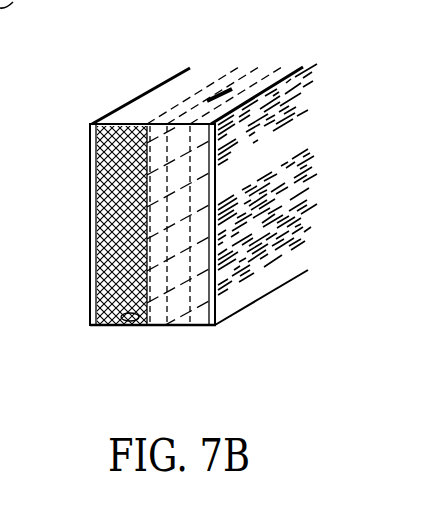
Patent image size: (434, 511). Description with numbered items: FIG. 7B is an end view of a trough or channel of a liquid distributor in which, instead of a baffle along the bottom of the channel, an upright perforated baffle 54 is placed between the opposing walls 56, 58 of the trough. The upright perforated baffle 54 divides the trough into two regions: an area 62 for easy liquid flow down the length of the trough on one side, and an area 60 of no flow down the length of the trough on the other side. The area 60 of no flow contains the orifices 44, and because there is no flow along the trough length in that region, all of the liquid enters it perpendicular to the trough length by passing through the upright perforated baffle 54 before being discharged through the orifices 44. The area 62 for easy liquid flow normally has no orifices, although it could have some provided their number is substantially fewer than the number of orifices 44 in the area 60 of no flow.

The orifices 44 is at (134, 327).
The upright perforated baffle 54 is at (205, 82).
The opposing wall 56 is at (127, 105).
The opposing wall 58 is at (284, 82).
The area of no flow 60 is at (99, 240).
The area for easy liquid flow 62 is at (198, 308).